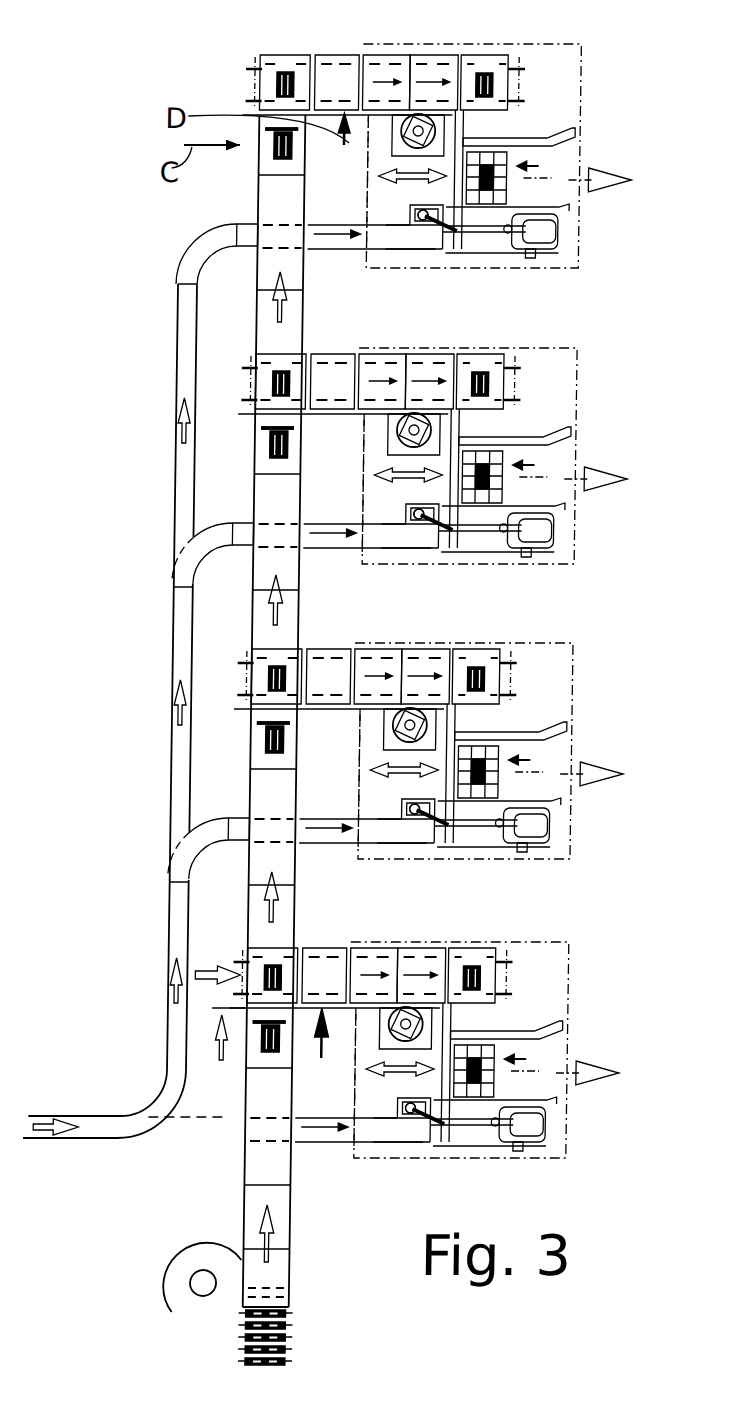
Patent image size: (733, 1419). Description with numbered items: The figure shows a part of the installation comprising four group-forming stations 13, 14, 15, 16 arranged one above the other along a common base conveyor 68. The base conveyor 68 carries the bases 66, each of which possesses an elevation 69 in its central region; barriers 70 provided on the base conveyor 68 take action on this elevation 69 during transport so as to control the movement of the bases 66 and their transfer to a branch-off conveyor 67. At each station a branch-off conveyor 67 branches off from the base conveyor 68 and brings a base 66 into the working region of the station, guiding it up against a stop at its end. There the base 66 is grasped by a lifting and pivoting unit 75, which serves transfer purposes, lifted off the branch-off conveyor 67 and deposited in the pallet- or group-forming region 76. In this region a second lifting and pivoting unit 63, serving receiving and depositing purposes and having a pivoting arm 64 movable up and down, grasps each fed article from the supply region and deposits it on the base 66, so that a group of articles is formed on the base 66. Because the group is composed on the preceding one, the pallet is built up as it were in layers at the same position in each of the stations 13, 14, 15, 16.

The group-forming station 13 is at (615, 1103).
The group-forming station 14 is at (611, 801).
The group-forming station 15 is at (607, 500).
The group-forming station 16 is at (604, 193).
The lifting and pivoting unit 63 is at (536, 235).
The pivoting arm 64 is at (480, 230).
The base 66 is at (278, 258).
The branch-off conveyor 67 is at (335, 46).
The base conveyor 68 is at (354, 896).
The elevation 69 is at (262, 153).
The barrier 70 is at (258, 133).
The lifting and pivoting unit 75 is at (382, 152).
The pallet- or group-forming region 76 is at (527, 166).